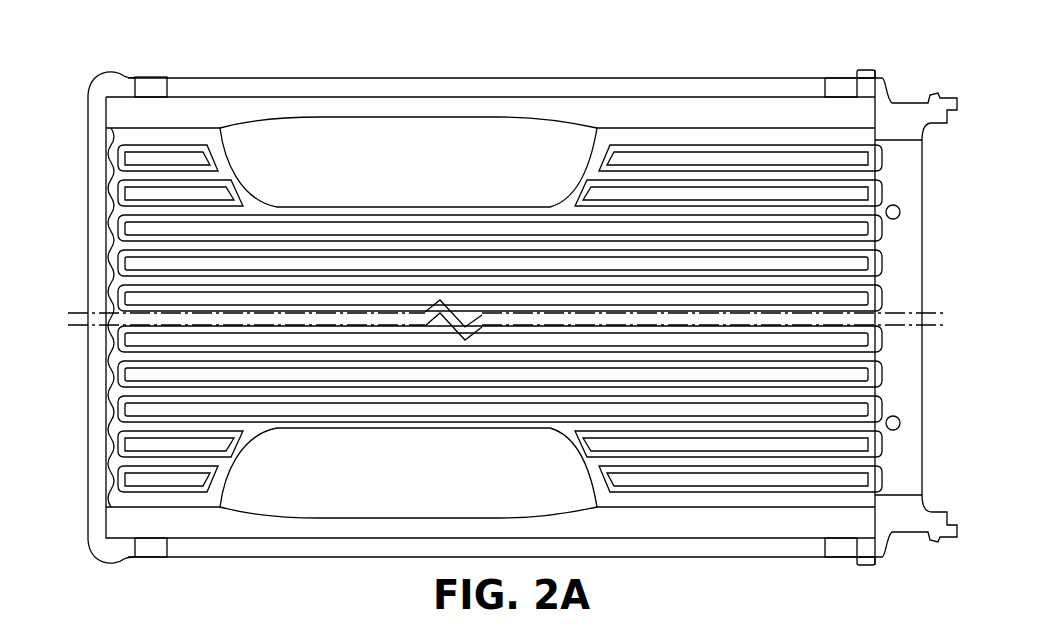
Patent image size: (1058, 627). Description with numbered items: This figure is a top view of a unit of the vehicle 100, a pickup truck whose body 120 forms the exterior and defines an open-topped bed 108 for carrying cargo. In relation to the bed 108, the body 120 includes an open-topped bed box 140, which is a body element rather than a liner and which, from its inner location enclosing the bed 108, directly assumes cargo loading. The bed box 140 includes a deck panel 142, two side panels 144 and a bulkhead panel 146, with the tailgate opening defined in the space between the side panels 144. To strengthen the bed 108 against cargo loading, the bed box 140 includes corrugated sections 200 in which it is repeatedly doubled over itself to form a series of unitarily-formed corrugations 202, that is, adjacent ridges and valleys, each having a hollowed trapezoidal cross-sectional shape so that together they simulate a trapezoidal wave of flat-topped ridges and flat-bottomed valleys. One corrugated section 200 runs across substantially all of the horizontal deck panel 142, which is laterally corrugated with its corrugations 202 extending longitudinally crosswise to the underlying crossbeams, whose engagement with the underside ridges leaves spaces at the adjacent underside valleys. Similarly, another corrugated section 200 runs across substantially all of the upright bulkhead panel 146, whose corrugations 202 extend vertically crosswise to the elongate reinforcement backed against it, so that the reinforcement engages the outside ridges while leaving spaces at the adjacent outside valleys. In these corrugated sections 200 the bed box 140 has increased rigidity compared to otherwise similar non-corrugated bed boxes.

The vehicle 100 is at (110, 70).
The bed 108 is at (197, 75).
The body 120 is at (272, 76).
The bed box 140 is at (353, 76).
The deck panel 142 is at (633, 128).
The side panels 144 is at (420, 78).
The bulkhead panel 146 is at (90, 374).
The corrugated section 200 is at (655, 145).
The corrugations 202 is at (678, 158).